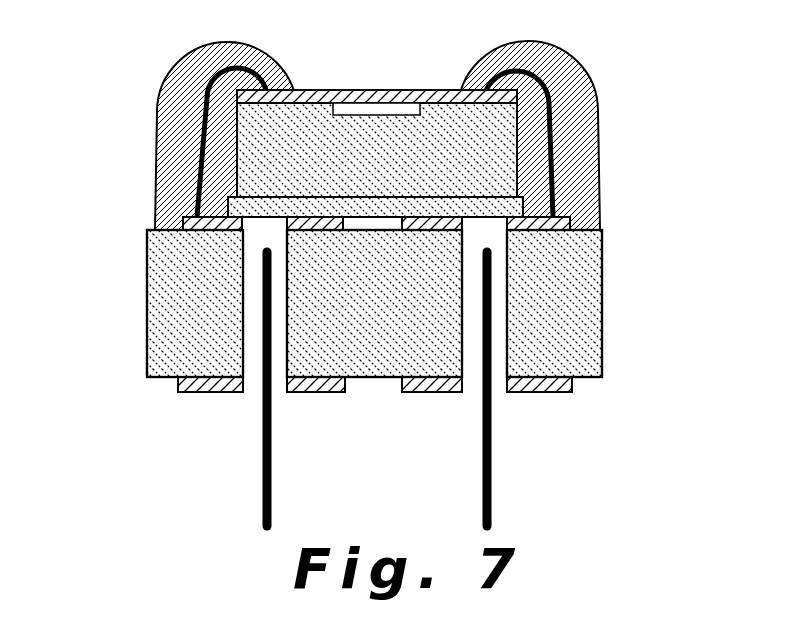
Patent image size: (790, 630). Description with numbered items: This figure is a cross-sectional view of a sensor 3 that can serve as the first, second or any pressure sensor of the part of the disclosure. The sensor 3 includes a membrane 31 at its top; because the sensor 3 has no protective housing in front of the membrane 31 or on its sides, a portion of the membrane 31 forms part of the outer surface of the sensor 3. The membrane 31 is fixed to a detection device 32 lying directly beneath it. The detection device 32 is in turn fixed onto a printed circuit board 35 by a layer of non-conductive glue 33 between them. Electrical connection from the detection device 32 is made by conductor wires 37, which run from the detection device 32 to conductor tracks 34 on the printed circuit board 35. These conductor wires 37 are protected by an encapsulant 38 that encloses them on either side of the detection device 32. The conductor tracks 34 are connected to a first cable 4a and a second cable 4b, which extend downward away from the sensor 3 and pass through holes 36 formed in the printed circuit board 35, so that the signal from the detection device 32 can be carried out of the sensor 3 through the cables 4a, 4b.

The sensor 3 is at (376, 263).
The membrane 31 is at (378, 97).
The detection device 32 is at (472, 148).
The non-conductive glue 33 is at (505, 205).
The conductor tracks 34 is at (158, 226).
The printed circuit board 35 is at (187, 287).
The holes 36 is at (255, 325).
The conductor wires 37 is at (543, 82).
The encapsulant 38 is at (587, 120).
The first cable 4a is at (262, 465).
The second cable 4b is at (490, 458).